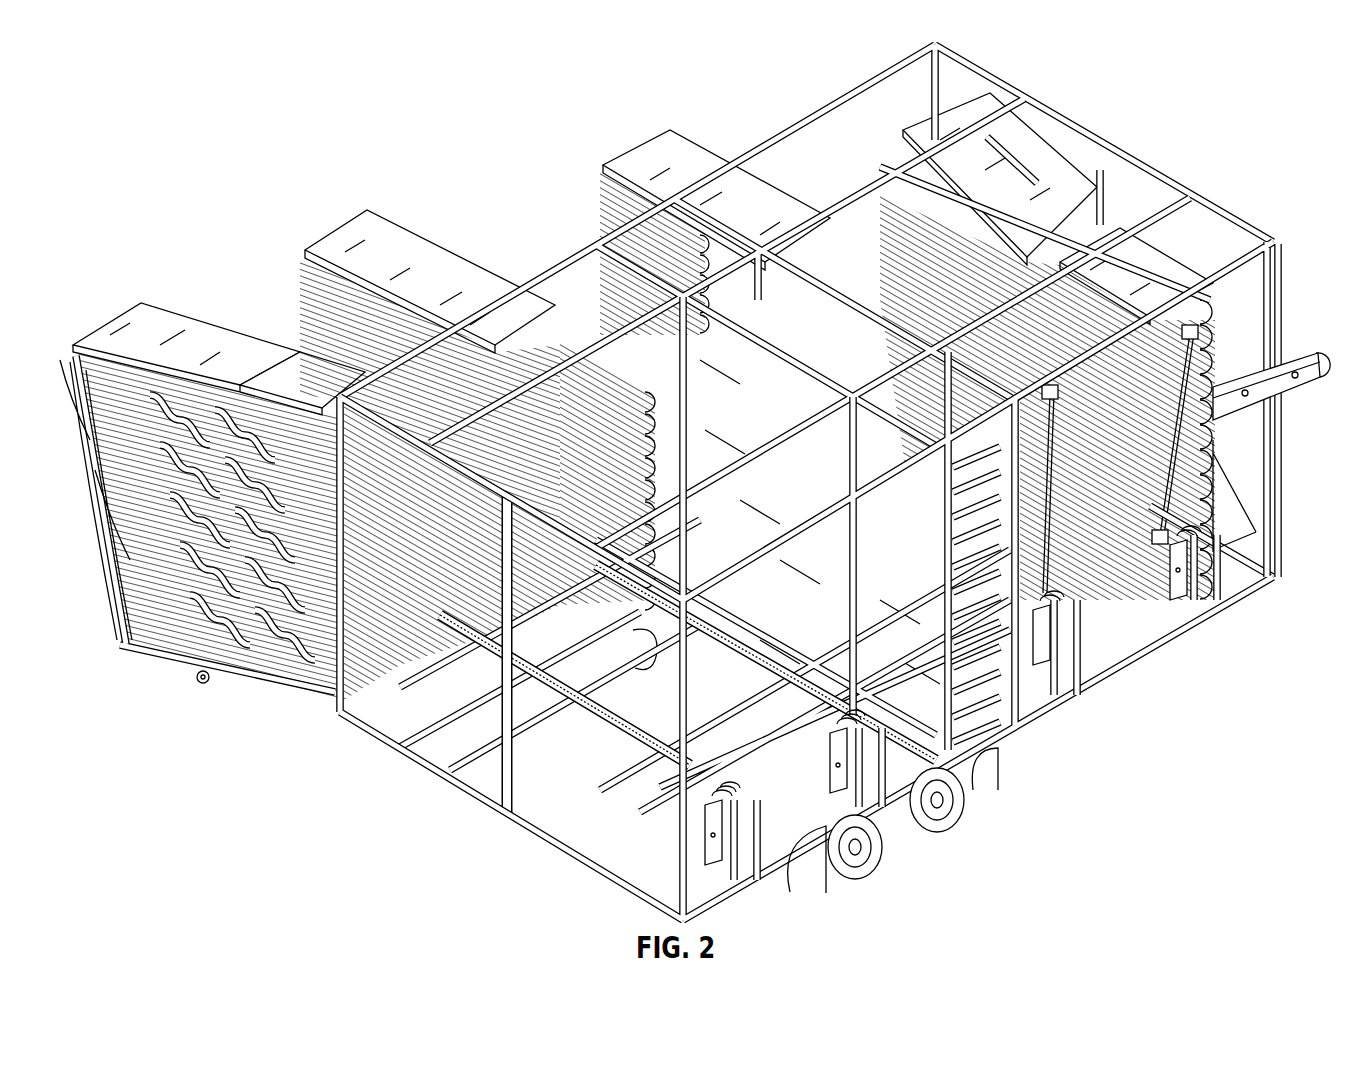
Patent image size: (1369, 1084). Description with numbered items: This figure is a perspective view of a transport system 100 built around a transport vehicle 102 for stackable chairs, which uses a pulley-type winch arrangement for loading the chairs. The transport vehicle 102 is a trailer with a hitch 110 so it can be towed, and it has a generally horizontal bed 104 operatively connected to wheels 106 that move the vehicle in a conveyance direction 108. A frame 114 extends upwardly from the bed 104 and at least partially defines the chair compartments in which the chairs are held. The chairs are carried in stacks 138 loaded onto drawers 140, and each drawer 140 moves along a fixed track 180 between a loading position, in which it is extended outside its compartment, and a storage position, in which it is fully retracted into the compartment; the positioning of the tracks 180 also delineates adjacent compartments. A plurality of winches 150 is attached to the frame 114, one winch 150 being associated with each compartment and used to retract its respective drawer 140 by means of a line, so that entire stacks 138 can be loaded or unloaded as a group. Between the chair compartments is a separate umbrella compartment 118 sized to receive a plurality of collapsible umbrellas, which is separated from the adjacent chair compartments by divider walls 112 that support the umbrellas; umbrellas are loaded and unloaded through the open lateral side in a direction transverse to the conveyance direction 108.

The transport system 100 is at (128, 128).
The transport vehicle 102 is at (438, 828).
The bed 104 is at (733, 896).
The wheels 106 is at (948, 830).
The conveyance direction 108 is at (1088, 833).
The hitch 110 is at (1302, 398).
The divider walls 112 is at (700, 394).
The frame 114 is at (822, 108).
The umbrella compartment 118 is at (1008, 725).
The stacks 138 is at (364, 245).
The drawers 140 is at (247, 685).
The winches 150 is at (838, 718).
The track 180 is at (622, 718).